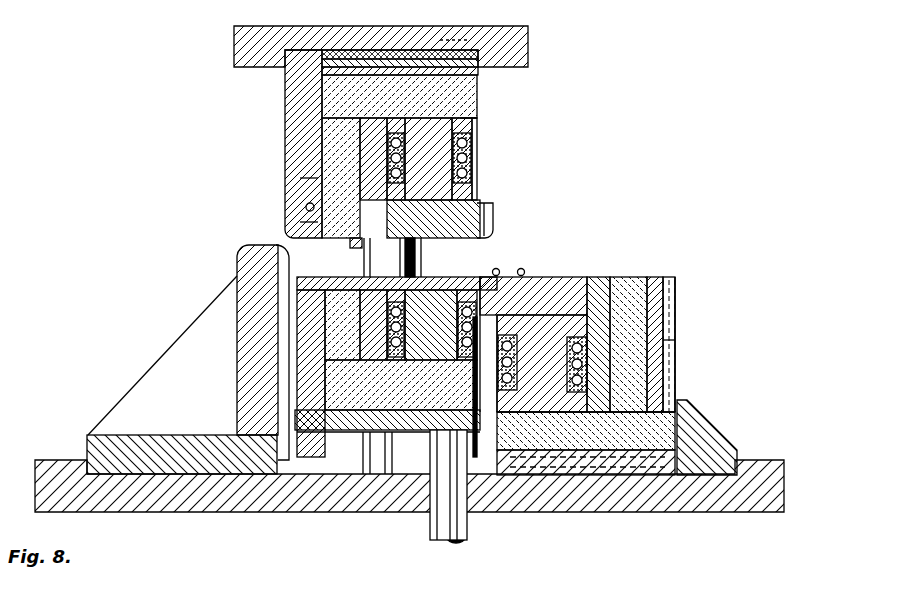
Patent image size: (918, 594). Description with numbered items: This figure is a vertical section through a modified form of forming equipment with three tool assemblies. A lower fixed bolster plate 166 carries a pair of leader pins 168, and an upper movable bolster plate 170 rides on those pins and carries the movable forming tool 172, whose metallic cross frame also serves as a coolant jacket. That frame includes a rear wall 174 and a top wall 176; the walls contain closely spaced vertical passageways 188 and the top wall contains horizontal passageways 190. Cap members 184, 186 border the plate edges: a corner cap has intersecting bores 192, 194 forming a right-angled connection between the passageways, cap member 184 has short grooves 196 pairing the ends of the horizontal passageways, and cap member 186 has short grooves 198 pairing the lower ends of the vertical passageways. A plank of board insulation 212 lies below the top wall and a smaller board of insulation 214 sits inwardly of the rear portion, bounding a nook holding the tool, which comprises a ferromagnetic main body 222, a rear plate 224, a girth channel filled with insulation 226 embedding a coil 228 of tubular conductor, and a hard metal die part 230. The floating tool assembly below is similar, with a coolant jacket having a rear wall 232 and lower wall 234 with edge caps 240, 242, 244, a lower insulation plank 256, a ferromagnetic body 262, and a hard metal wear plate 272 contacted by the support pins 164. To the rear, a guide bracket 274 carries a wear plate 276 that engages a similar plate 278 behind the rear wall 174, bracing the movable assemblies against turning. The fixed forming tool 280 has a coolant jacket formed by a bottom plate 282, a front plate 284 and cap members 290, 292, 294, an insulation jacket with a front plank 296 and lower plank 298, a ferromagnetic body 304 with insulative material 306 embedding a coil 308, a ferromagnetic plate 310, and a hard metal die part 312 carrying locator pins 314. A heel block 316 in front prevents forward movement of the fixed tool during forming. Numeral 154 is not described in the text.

The support post 154 is at (350, 293).
The support pin 164 is at (446, 539).
The lower fixed bolster plate 166 is at (183, 504).
The leader pin 168 is at (402, 255).
The upper movable bolster plate 170 is at (440, 44).
The movable forming tool 172 is at (354, 120).
The rear wall 174 is at (290, 97).
The top wall 176 is at (392, 60).
The cap member 184 is at (478, 100).
The cap member 186 is at (298, 222).
The vertical passageways 188 is at (298, 122).
The horizontal passageways 190 is at (458, 38).
The bore 192 is at (286, 75).
The bore 194 is at (337, 46).
The short grooves 196 is at (480, 76).
The short grooves 198 is at (302, 204).
The plank of board insulation 212 is at (478, 120).
The board of insulation 214 is at (345, 137).
The main body 222 is at (460, 192).
The rear plate 224 is at (357, 240).
The insulation 226 is at (470, 167).
The coil 228 is at (472, 150).
The hard metal die part 230 is at (480, 214).
The rear wall 232 is at (300, 357).
The lower wall 234 is at (350, 395).
The edge cap 240 is at (385, 290).
The edge cap 242 is at (298, 414).
The edge cap 244 is at (410, 288).
The lower plank 256 is at (390, 398).
The ferromagnetic body 262 is at (467, 285).
The hard metal wear plate 272 is at (343, 432).
The guide bracket 274 is at (178, 336).
The wear plate 276 is at (285, 247).
The wear plate 278 is at (293, 178).
The fixed forming tool 280 is at (634, 392).
The bottom plate 282 is at (637, 440).
The front plate 284 is at (677, 355).
The cap member 290 is at (518, 448).
The cap member 292 is at (677, 290).
The cap member 294 is at (668, 445).
The front plank 296 is at (675, 278).
The lower plank 298 is at (586, 440).
The ferromagnetic body 304 is at (598, 390).
The insulative material 306 is at (612, 280).
The coil 308 is at (590, 382).
The ferromagnetic plate 310 is at (614, 292).
The hard metal die part 312 is at (547, 318).
The locator pins 314 is at (500, 270).
The heel block 316 is at (697, 437).